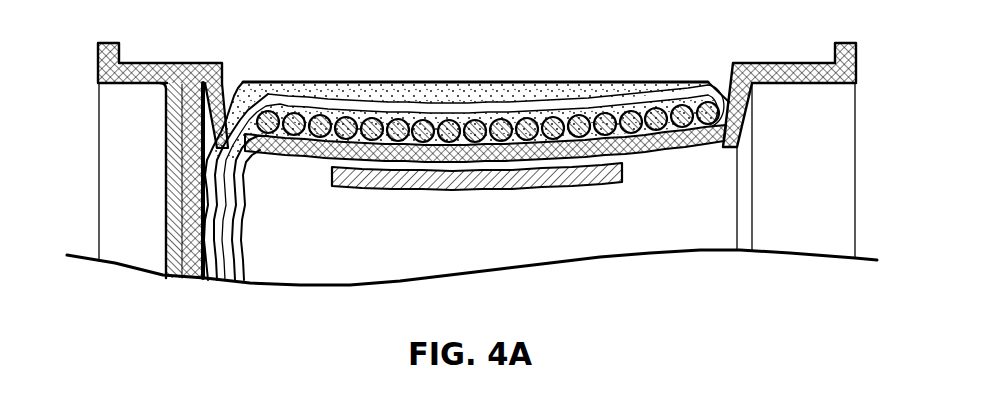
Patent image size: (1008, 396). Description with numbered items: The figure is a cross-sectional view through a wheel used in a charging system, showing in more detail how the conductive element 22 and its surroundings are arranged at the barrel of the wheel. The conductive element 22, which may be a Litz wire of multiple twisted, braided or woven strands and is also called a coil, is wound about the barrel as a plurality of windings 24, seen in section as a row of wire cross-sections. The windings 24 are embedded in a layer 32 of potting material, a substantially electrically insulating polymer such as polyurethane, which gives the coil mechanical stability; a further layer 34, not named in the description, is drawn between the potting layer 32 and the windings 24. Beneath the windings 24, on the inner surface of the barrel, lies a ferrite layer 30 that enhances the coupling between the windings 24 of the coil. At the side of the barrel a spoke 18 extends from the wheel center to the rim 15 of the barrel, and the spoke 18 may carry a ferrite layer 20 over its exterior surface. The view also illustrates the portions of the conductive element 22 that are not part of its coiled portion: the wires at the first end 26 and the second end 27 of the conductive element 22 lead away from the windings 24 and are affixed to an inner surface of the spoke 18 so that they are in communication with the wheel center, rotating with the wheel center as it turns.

The rim 15 is at (271, 159).
The spoke 18 is at (166, 113).
The ferrite layer 20 is at (166, 174).
The conductive element 22 is at (702, 100).
The windings 24 is at (315, 116).
The first end 26 is at (237, 279).
The second end 27 is at (240, 258).
The ferrite layer 30 is at (385, 188).
The layer of potting material 32 is at (411, 85).
The inner insulation layer 34 is at (481, 108).